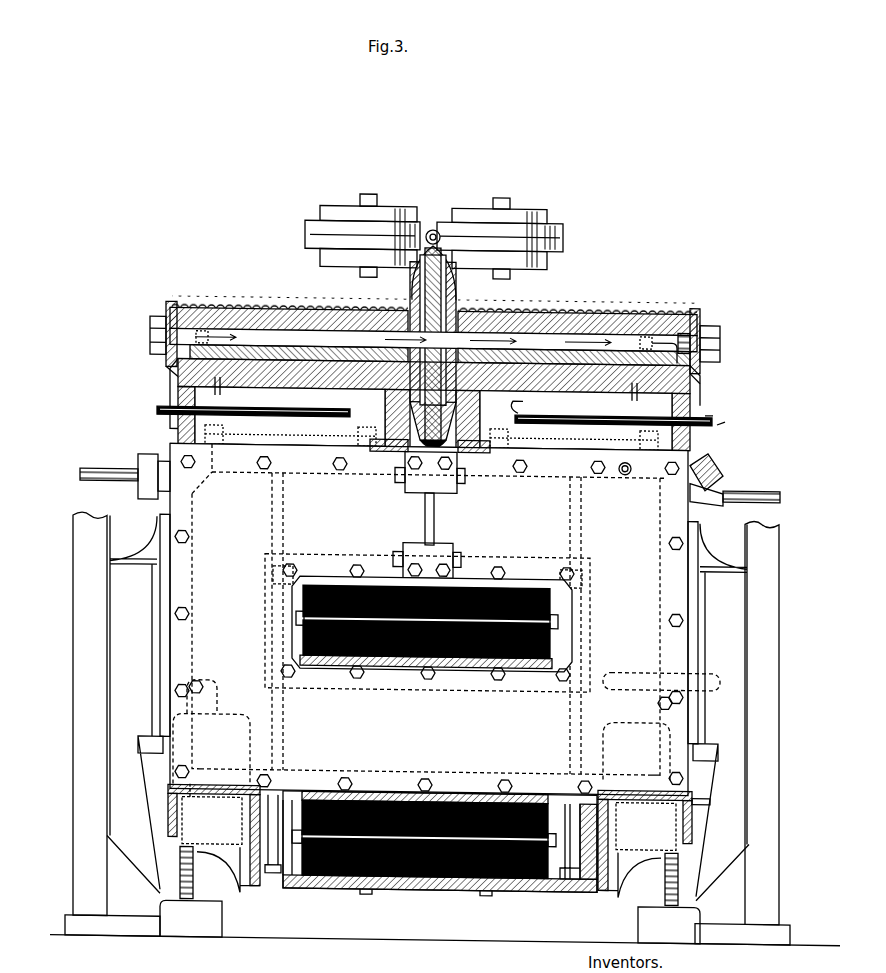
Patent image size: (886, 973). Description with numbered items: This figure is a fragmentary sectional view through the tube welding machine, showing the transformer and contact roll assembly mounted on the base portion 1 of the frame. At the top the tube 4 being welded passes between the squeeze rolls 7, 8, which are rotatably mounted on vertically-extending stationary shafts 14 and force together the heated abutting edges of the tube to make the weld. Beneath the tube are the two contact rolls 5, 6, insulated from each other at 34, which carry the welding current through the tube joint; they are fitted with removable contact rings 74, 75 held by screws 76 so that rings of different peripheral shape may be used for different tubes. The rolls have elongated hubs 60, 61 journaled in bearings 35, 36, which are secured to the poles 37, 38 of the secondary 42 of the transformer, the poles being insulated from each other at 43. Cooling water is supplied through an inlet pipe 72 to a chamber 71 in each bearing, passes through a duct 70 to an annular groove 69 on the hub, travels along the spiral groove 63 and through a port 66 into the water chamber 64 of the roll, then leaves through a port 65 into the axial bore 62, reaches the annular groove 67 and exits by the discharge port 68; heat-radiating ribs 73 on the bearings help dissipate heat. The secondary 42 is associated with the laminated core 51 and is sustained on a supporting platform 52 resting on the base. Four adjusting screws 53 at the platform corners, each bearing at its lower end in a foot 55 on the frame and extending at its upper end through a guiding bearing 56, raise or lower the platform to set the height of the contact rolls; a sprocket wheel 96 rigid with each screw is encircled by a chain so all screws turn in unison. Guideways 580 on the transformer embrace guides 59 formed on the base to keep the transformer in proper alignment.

The base portion 1 is at (78, 766).
The tube 4 is at (433, 229).
The contact roll 5 is at (420, 268).
The contact roll 6 is at (446, 252).
The squeeze roll 7 is at (332, 216).
The squeeze roll 8 is at (457, 214).
The stationary shaft 14 is at (369, 196).
The insulation 34 is at (447, 475).
The bearing 35 is at (178, 394).
The bearing 36 is at (622, 345).
The pole 37 is at (429, 619).
The pole 38 is at (546, 514).
The secondary 42 is at (685, 650).
The insulation 43 is at (425, 512).
The laminated core 51 is at (514, 892).
The supporting platform 52 is at (452, 892).
The adjusting screw 53 is at (203, 900).
The foot 55 is at (205, 927).
The guiding bearing 56 is at (213, 696).
The guide 59 is at (156, 742).
The elongated hub 60 is at (290, 305).
The elongated hub 61 is at (565, 306).
The axial bore 62 is at (151, 330).
The spiral groove 63 is at (320, 305).
The water chamber 64 is at (410, 305).
The port 65 is at (480, 315).
The port 66 is at (521, 403).
The annular groove 67 is at (190, 303).
The discharge port 68 is at (171, 380).
The annular groove 69 is at (222, 306).
The duct 70 is at (220, 388).
The chamber 71 is at (690, 410).
The inlet pipe 72 is at (158, 418).
The heat-radiating ribs 73 is at (257, 305).
The removable contact ring 74 is at (405, 452).
The removable contact ring 75 is at (460, 452).
The screw 76 is at (395, 392).
The sprocket wheel 96 is at (168, 800).
The guideway 580 is at (160, 590).